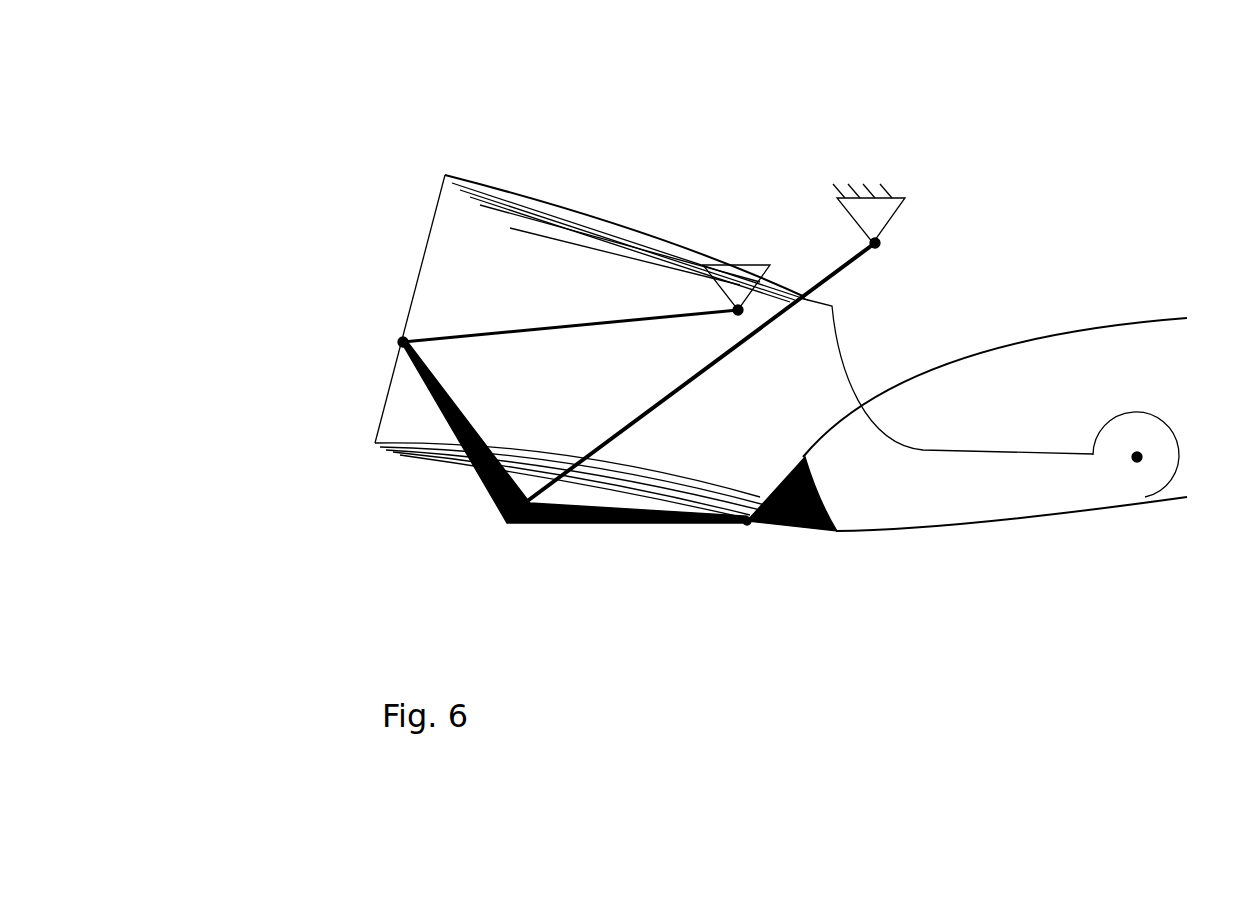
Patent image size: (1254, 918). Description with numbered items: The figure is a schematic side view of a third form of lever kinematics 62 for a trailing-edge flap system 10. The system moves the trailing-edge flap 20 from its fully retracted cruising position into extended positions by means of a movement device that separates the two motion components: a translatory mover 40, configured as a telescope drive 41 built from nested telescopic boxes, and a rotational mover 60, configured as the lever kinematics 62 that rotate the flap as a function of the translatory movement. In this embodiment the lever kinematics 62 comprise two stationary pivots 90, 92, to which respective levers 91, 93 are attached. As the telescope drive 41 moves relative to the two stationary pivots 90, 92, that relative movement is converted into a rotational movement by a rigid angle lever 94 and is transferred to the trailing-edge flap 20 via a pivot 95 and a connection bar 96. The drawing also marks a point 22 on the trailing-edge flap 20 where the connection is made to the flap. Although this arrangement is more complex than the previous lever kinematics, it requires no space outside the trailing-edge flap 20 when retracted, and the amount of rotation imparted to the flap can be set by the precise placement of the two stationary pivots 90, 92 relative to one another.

The trailing-edge flap system 10 is at (1032, 147).
The trailing-edge flap 20 is at (1100, 386).
The wing pivot point 22 is at (1136, 462).
The translatory mover 40 is at (380, 219).
The telescope drive 41 is at (593, 206).
The rotational mover 60 is at (780, 200).
The lever kinematics 62 is at (423, 513).
The stationary pivot 90 is at (880, 245).
The lever 91 is at (675, 410).
The stationary pivot 92 is at (736, 310).
The lever 93 is at (488, 333).
The rigid angle lever 94 is at (562, 524).
The pivot 95 is at (745, 527).
The connection bar 96 is at (807, 533).